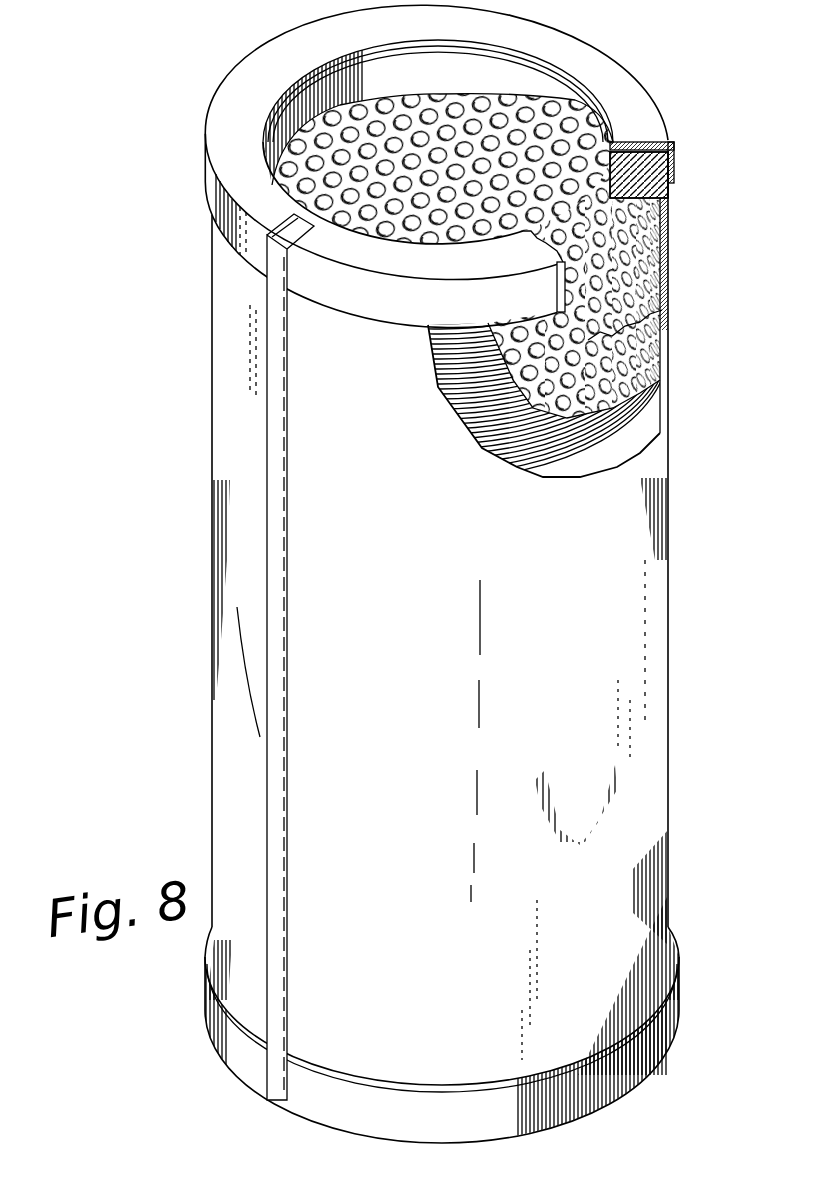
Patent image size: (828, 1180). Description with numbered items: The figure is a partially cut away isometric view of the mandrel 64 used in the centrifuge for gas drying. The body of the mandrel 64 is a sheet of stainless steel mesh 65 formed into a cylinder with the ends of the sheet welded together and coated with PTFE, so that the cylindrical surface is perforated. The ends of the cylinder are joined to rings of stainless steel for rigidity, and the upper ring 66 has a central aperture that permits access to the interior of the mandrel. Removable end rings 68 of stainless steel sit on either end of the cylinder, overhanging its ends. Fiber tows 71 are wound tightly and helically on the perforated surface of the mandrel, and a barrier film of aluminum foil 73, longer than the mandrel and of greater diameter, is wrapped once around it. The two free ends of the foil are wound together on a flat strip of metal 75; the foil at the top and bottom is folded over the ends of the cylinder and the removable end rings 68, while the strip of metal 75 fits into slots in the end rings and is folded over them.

The mandrel 64 is at (441, 572).
The sheet of stainless steel mesh 65 is at (633, 347).
The upper ring 66 is at (660, 167).
The removable end rings 68 is at (268, 58).
The fiber tows 71 is at (670, 413).
The barrier film of aluminum foil 73 is at (612, 136).
The flat strip of metal 75 is at (290, 228).